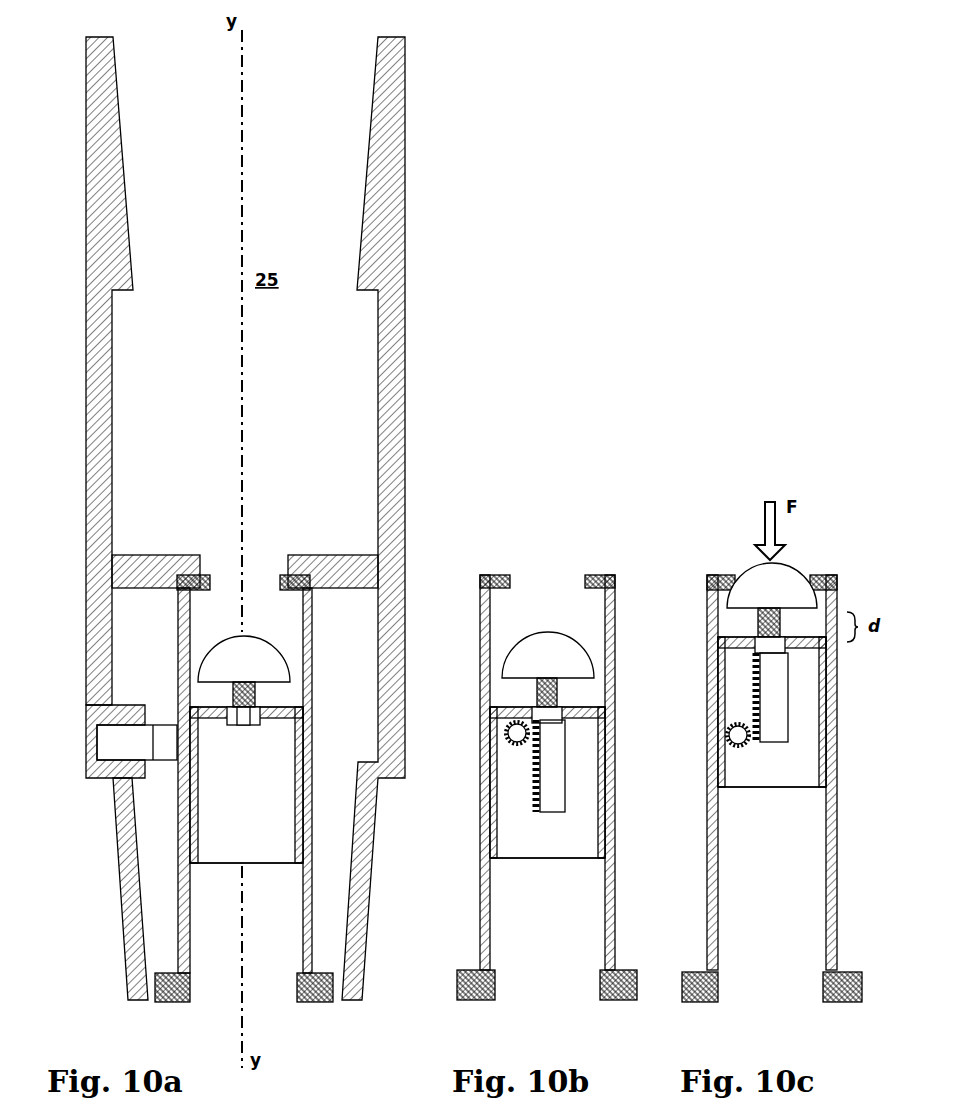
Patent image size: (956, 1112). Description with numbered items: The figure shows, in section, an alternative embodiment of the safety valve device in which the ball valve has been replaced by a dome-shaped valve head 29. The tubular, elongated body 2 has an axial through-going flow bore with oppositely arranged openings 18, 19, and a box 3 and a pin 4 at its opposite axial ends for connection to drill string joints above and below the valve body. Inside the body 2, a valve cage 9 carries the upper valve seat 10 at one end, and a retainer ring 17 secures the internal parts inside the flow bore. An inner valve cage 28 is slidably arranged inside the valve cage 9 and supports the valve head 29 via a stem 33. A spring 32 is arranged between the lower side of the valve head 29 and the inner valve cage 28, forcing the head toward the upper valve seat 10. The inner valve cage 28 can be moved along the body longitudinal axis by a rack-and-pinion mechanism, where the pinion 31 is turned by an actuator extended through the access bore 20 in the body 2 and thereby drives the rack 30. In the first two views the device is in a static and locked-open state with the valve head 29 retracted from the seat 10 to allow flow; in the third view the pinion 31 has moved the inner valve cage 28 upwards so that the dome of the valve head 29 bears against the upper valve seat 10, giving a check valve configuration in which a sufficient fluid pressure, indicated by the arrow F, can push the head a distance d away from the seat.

In FIG. 10A, the body 2 is at (412, 518).
In FIG. 10A, the box 3 is at (147, 371).
In FIG. 10A, the pin 4 is at (98, 889).
In FIG. 10A, the valve cage 9 is at (366, 645).
In FIG. 10A, the first (upper) valve seat 10 is at (207, 712).
In FIG. 10B, the first (upper) valve seat 10 is at (540, 726).
In FIG. 10C, the first (upper) valve seat 10 is at (805, 751).
In FIG. 10A, the retainer ring 17 is at (347, 1012).
In FIG. 10A, the opening 18 is at (191, 1007).
In FIG. 10A, the opening 19 is at (357, 34).
In FIG. 10A, the access bore 20 is at (92, 741).
In FIG. 10A, the inner valve cage 28 is at (303, 818).
In FIG. 10B, the inner valve cage 28 is at (573, 808).
In FIG. 10C, the inner valve cage 28 is at (800, 738).
In FIG. 10A, the valve head 29 is at (163, 589).
In FIG. 10B, the valve head 29 is at (502, 600).
In FIG. 10C, the valve head 29 is at (720, 555).
In FIG. 10B, the rack 30 is at (495, 779).
In FIG. 10C, the rack 30 is at (717, 697).
In FIG. 10B, the pinion 31 is at (477, 763).
In FIG. 10C, the pinion 31 is at (697, 756).
In FIG. 10A, the spring 32 is at (233, 695).
In FIG. 10B, the spring 32 is at (491, 692).
In FIG. 10C, the spring 32 is at (713, 622).
In FIG. 10A, the stem 33 is at (307, 692).